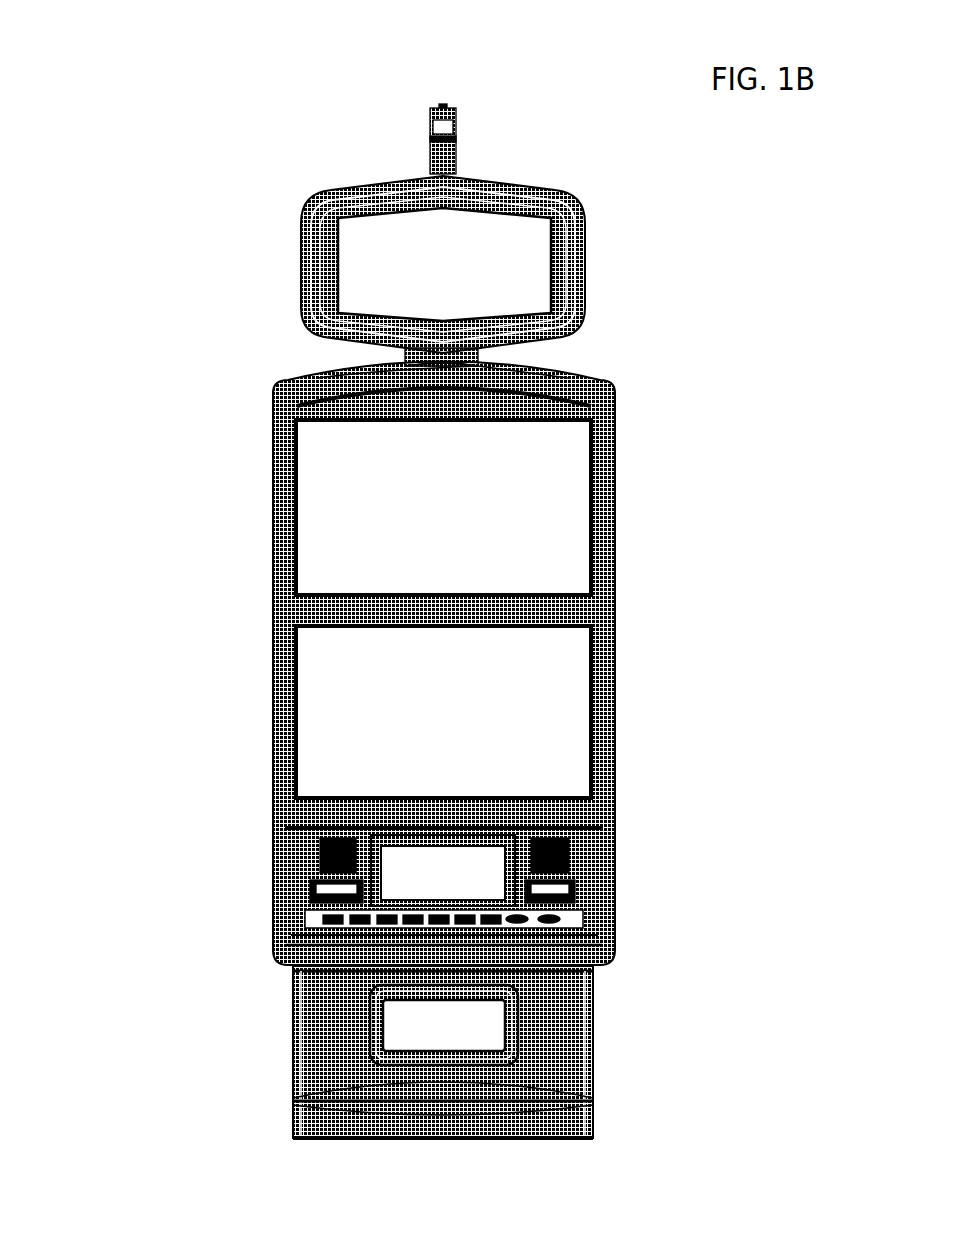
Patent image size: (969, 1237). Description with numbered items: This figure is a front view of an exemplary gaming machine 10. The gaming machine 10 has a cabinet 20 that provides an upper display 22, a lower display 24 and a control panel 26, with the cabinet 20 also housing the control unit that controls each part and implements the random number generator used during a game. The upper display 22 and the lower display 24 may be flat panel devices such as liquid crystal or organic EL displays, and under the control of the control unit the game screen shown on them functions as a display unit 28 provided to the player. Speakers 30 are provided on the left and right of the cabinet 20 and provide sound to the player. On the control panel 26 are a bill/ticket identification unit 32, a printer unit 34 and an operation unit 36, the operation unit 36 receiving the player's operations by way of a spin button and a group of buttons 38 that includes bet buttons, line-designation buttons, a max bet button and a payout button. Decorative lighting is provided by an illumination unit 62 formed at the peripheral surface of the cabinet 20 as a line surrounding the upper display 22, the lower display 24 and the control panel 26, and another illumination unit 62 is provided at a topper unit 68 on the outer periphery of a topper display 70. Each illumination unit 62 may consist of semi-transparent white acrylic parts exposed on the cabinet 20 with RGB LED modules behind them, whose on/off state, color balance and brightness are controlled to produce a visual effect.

The gaming machine 10 is at (156, 82).
The cabinet 20 is at (688, 589).
The upper display 22 is at (312, 473).
The lower display 24 is at (312, 695).
The control panel 26 is at (300, 904).
The display unit 28 is at (180, 698).
The speakers 30 is at (310, 832).
The bill/ticket identification unit 32 is at (568, 874).
The printer unit 34 is at (300, 873).
The operation unit 36 is at (358, 934).
The group of buttons 38 is at (490, 928).
The illumination unit 62 is at (573, 205).
The topper unit 68 is at (271, 229).
The topper display 70 is at (345, 285).